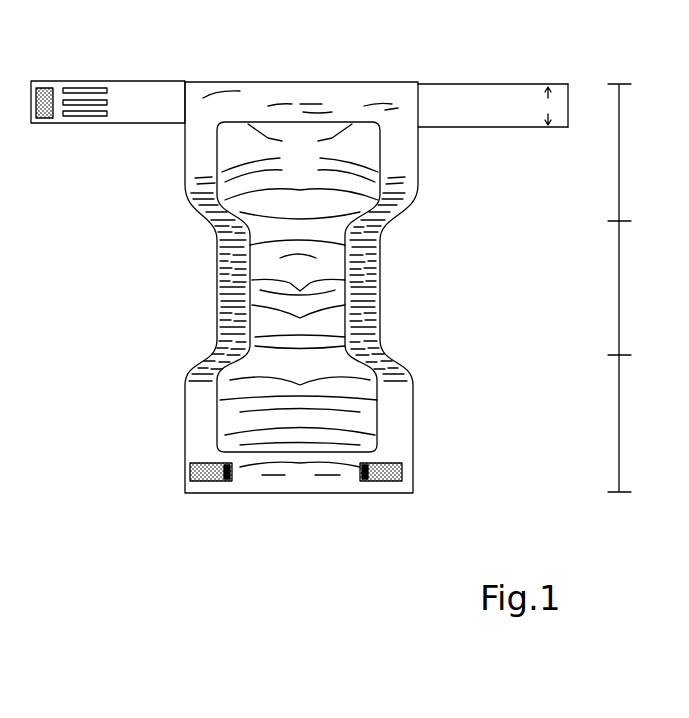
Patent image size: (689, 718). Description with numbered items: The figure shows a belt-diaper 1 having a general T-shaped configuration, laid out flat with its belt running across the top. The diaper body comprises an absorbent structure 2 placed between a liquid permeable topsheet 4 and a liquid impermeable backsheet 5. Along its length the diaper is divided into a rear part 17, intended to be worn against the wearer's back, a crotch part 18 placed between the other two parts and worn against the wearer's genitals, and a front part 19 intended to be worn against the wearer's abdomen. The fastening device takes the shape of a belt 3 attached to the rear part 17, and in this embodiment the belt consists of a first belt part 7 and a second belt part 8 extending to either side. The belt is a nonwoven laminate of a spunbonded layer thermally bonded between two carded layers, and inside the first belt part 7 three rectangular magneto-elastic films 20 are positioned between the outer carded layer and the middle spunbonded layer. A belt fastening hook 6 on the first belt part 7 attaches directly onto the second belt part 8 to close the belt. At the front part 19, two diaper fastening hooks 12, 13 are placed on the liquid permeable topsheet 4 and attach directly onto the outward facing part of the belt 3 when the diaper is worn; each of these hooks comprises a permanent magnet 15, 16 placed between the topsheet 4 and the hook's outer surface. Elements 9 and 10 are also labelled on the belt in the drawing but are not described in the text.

The belt-diaper 1 is at (118, 290).
The absorbent structure 2 is at (382, 270).
The belt 3 is at (107, 93).
The liquid permeable topsheet 4 is at (297, 92).
The liquid impermeable backsheet 5 is at (292, 478).
The belt fastening hook 6 is at (44, 116).
The first belt part 7 is at (133, 108).
The second belt part 8 is at (450, 121).
The fastening tab 9 is at (493, 95).
The tab end portion 10 is at (514, 128).
The diaper fastening hook 12 is at (225, 513).
The diaper fastening hook 13 is at (364, 513).
The permanent magnet 15 is at (230, 472).
The permanent magnet 16 is at (358, 472).
The rear part 17 is at (638, 152).
The crotch part 18 is at (638, 288).
The front part 19 is at (638, 423).
The magneto-elastic films 20 is at (82, 84).